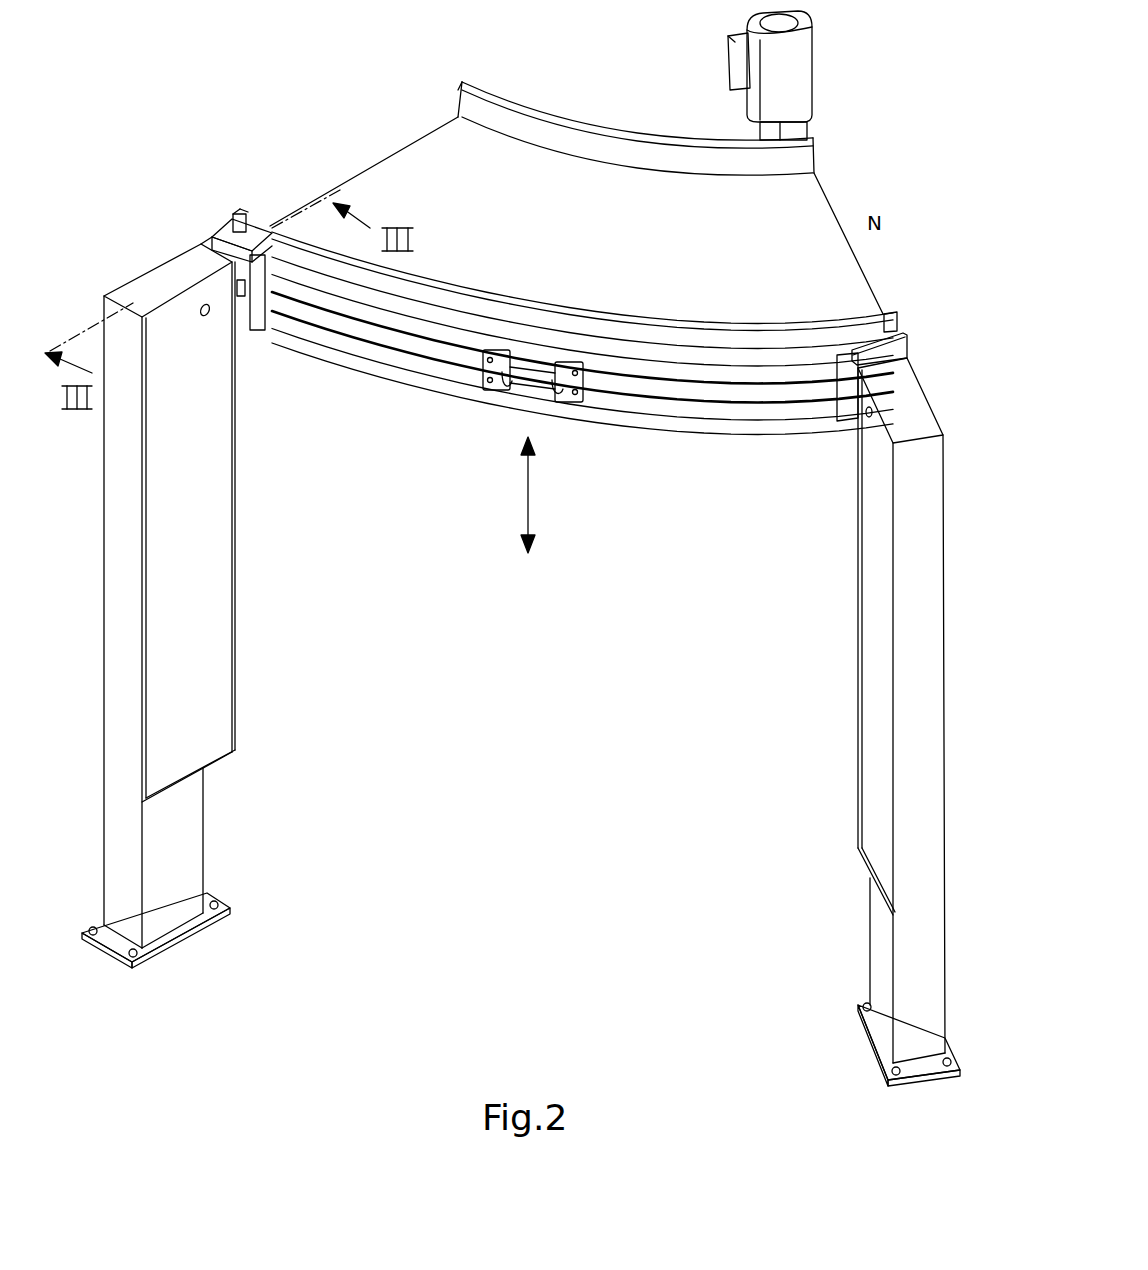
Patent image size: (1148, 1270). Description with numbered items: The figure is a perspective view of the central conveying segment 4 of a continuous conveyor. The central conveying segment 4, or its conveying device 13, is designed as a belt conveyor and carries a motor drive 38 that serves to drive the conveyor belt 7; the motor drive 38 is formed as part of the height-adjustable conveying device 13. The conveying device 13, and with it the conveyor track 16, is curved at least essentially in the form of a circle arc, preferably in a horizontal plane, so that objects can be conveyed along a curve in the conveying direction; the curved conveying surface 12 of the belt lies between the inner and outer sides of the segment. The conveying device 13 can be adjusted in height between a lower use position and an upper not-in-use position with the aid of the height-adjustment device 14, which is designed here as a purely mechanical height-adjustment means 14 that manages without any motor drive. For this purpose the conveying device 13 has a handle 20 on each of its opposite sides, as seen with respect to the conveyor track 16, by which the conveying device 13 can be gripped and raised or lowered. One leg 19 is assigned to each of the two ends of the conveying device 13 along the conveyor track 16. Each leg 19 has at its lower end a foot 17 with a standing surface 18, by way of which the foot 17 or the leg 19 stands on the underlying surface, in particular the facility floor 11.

The central conveying segment 4 is at (636, 70).
The conveyor belt 7 is at (522, 180).
The facility floor 11 is at (553, 947).
The conveying surface 12 is at (432, 160).
The conveying device 13 is at (699, 470).
The height-adjustment device 14 is at (140, 198).
The conveyor track 16 is at (670, 250).
The foot 17 is at (205, 926).
The standing surface 18 is at (172, 947).
The leg 19 is at (192, 842).
The handle 20 is at (525, 392).
The motor drive 38 is at (800, 74).